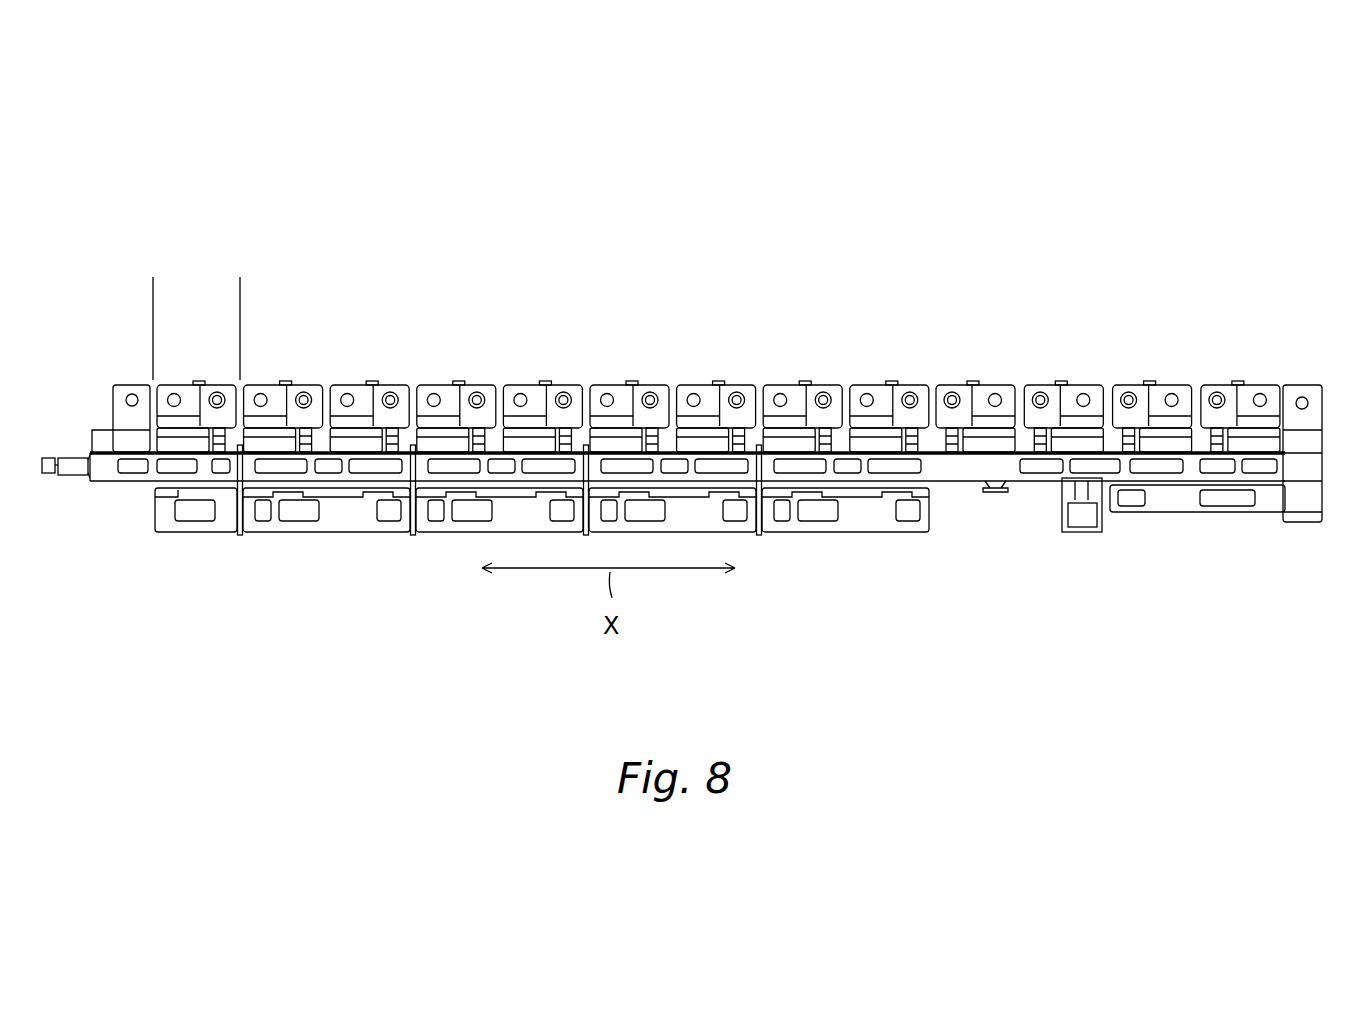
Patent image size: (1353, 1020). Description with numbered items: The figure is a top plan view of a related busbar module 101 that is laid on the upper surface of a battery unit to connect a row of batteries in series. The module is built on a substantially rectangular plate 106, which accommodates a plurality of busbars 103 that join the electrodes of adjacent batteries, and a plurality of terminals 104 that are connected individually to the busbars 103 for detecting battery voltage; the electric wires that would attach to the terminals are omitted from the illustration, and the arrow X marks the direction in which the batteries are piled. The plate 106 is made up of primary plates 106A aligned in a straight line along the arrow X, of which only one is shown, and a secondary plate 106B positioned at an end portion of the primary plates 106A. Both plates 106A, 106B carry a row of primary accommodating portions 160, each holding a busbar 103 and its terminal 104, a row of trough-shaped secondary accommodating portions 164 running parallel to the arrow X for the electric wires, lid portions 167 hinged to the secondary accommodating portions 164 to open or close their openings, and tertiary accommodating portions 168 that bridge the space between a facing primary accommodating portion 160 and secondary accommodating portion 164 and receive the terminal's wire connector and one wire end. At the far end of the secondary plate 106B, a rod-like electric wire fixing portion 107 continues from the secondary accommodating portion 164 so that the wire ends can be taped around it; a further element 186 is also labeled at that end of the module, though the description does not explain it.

The busbar module 101 is at (976, 180).
The busbar 103 is at (193, 384).
The terminal 104 is at (220, 385).
The plate 106 is at (1197, 700).
The primary plate 106A is at (1230, 235).
The secondary plate 106B is at (692, 233).
The electric wire fixing portion 107 is at (48, 478).
The primary accommodating portion 160 is at (716, 298).
The secondary accommodating portion 164 is at (104, 475).
The lid portion 167 is at (255, 517).
The tertiary accommodating portion 168 is at (202, 455).
The coupling member 186 is at (66, 455).